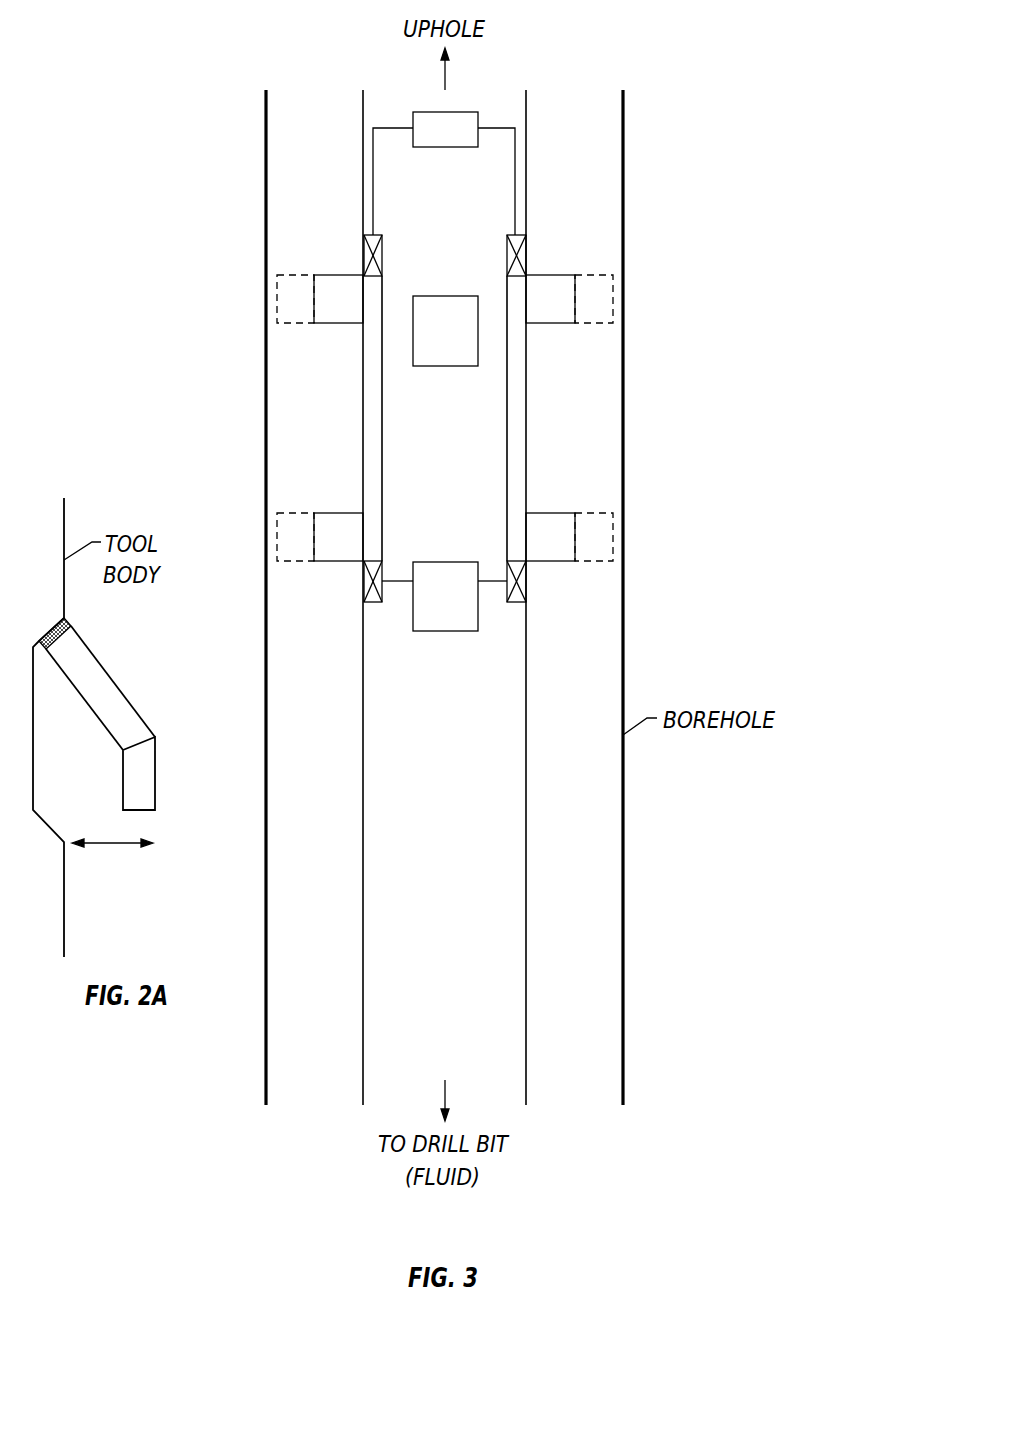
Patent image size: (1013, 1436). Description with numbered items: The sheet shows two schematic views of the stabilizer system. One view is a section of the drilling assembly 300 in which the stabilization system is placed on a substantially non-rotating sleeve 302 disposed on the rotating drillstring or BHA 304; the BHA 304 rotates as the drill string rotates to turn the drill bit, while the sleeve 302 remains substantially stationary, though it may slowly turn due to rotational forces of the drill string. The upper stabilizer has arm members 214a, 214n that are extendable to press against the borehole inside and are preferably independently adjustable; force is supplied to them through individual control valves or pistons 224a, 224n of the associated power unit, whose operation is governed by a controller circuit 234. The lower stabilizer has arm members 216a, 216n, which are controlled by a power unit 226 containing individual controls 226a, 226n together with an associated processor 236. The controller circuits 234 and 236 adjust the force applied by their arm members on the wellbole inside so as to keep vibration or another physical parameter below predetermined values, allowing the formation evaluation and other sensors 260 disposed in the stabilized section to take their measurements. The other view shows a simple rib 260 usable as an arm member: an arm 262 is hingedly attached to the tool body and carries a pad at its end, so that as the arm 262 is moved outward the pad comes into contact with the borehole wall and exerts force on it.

In FIG. 3, the downhole tool / logging assembly 300 is at (257, 408).
In FIG. 3, the sleeve 302 is at (635, 597).
In FIG. 3, the BHA 304 is at (526, 842).
In FIG. 3, the controller circuit 234 is at (466, 140).
In FIG. 3, the processor 236 is at (466, 607).
In FIG. 3, the sensors 260 is at (466, 342).
In FIG. 2A, the sensors 260 is at (118, 684).
In FIG. 2A, the arm 262 is at (185, 772).
In FIG. 3, the arm member 214n is at (318, 324).
In FIG. 3, the arm member 214a is at (569, 324).
In FIG. 3, the arm member 216n is at (318, 511).
In FIG. 3, the arm member 216a is at (569, 511).
In FIG. 3, the control valve or piston 224n is at (327, 248).
In FIG. 3, the control valve or piston 224a is at (560, 248).
In FIG. 3, the individual control 226n is at (327, 587).
In FIG. 3, the individual control 226a is at (560, 587).
In FIG. 3, the power unit 226 is at (436, 669).